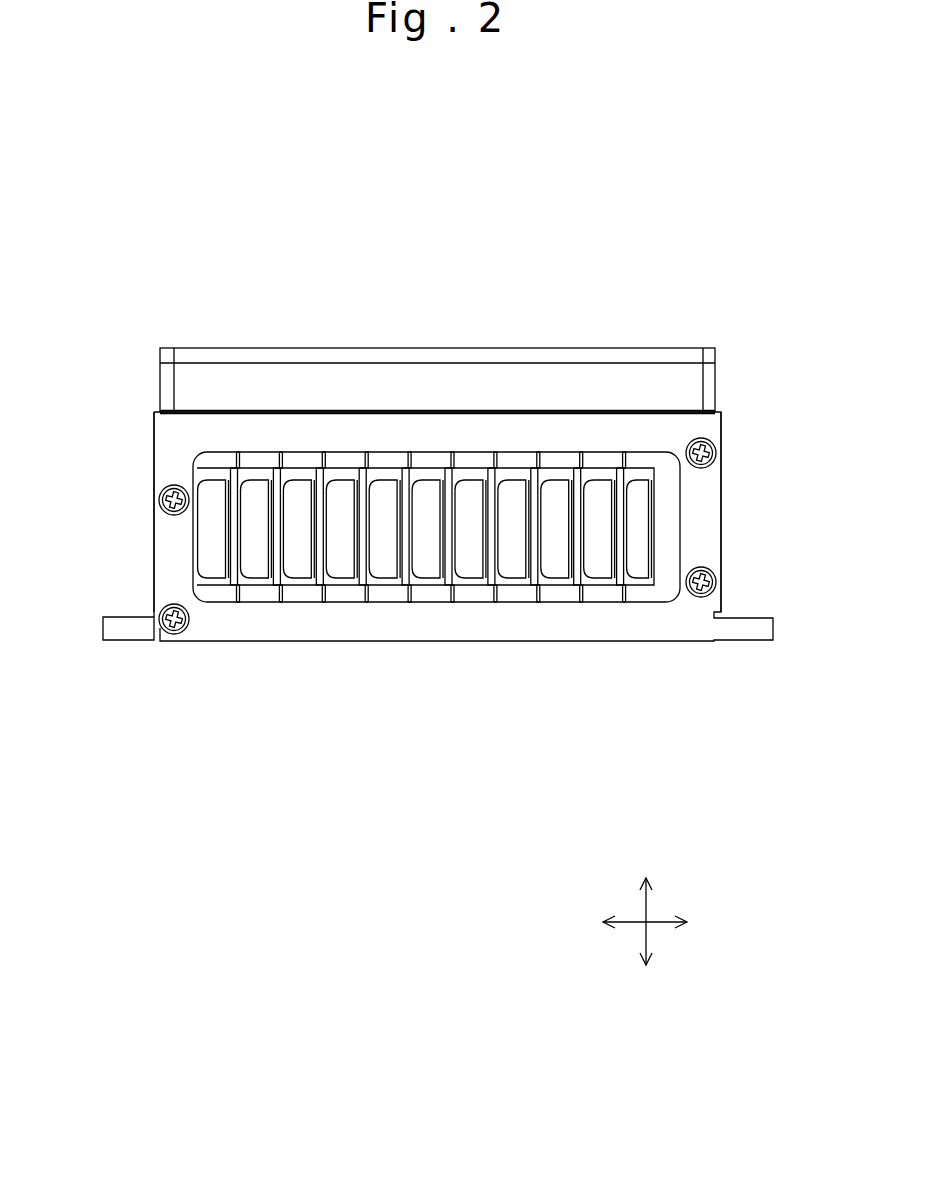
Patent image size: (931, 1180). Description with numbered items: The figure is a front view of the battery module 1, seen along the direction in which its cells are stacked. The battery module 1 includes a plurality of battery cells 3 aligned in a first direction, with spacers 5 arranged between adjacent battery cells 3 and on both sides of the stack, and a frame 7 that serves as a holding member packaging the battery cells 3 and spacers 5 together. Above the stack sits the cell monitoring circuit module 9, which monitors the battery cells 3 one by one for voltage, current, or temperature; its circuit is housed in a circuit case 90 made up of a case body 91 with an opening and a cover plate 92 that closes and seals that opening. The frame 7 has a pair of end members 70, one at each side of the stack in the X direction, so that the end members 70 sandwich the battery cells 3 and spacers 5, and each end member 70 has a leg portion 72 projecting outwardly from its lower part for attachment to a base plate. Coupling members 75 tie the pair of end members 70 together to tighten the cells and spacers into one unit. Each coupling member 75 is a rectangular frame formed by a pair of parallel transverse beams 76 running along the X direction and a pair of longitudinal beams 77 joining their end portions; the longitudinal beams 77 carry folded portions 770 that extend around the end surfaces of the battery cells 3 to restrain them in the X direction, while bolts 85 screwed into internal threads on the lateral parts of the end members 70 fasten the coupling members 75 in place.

The battery module 1 is at (743, 258).
The battery cell 3 is at (208, 582).
The spacer 5 is at (223, 570).
The frame 7 is at (429, 515).
The cell monitoring circuit module 9 is at (415, 317).
The end member 70 is at (143, 552).
The leg portion 72 is at (117, 632).
The coupling member 75 is at (425, 654).
The transverse beam 76 is at (473, 418).
The longitudinal beam 77 is at (178, 456).
The bolt 85 is at (160, 487).
The circuit case 90 is at (405, 263).
The case body 91 is at (350, 388).
The cover plate 92 is at (388, 355).
The folded portion 770 is at (157, 428).